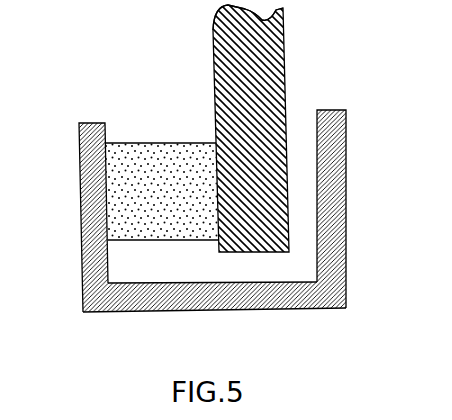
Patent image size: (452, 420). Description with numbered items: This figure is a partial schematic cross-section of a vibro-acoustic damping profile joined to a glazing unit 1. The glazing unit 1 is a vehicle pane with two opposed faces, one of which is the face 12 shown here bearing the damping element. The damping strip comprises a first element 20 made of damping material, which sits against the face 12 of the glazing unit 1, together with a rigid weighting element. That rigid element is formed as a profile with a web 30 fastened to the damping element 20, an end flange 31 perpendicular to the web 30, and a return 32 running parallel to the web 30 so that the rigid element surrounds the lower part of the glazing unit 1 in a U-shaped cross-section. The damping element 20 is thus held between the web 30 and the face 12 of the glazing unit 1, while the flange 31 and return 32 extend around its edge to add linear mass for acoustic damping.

The glazing unit 1 is at (267, 59).
The face of the glazing unit 12 is at (213, 38).
The first element made of damping material 20 is at (177, 167).
The web 30 is at (92, 213).
The end flange 31 is at (135, 285).
The return 32 is at (332, 204).